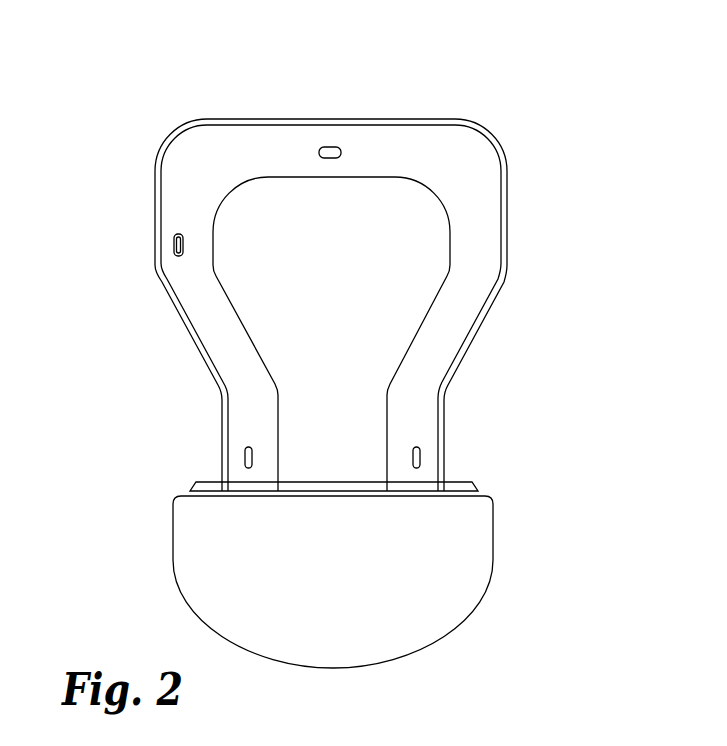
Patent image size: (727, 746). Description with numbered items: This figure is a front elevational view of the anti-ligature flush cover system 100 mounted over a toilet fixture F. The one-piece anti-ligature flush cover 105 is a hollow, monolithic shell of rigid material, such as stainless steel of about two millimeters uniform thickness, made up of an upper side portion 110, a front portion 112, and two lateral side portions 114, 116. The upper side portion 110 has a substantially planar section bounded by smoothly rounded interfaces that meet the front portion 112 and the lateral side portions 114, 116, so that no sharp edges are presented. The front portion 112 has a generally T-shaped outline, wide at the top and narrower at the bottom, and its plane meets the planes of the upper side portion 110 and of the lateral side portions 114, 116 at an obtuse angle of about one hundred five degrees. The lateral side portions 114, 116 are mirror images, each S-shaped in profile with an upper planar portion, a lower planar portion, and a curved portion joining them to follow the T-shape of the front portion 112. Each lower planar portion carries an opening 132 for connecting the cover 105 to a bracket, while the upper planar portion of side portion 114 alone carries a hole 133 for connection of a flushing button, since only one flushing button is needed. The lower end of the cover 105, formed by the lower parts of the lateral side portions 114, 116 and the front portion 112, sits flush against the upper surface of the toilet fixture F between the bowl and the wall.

The system 100 is at (335, 248).
The one-piece anti-ligature flush cover 105 is at (178, 128).
The upper side portion 110 is at (406, 145).
The front portion 112 is at (358, 343).
The lateral side portion 114 is at (207, 325).
The lateral side portion 116 is at (478, 250).
The opening 132 is at (246, 458).
The upper slot 133 is at (175, 242).
The toilet fixture F is at (470, 584).